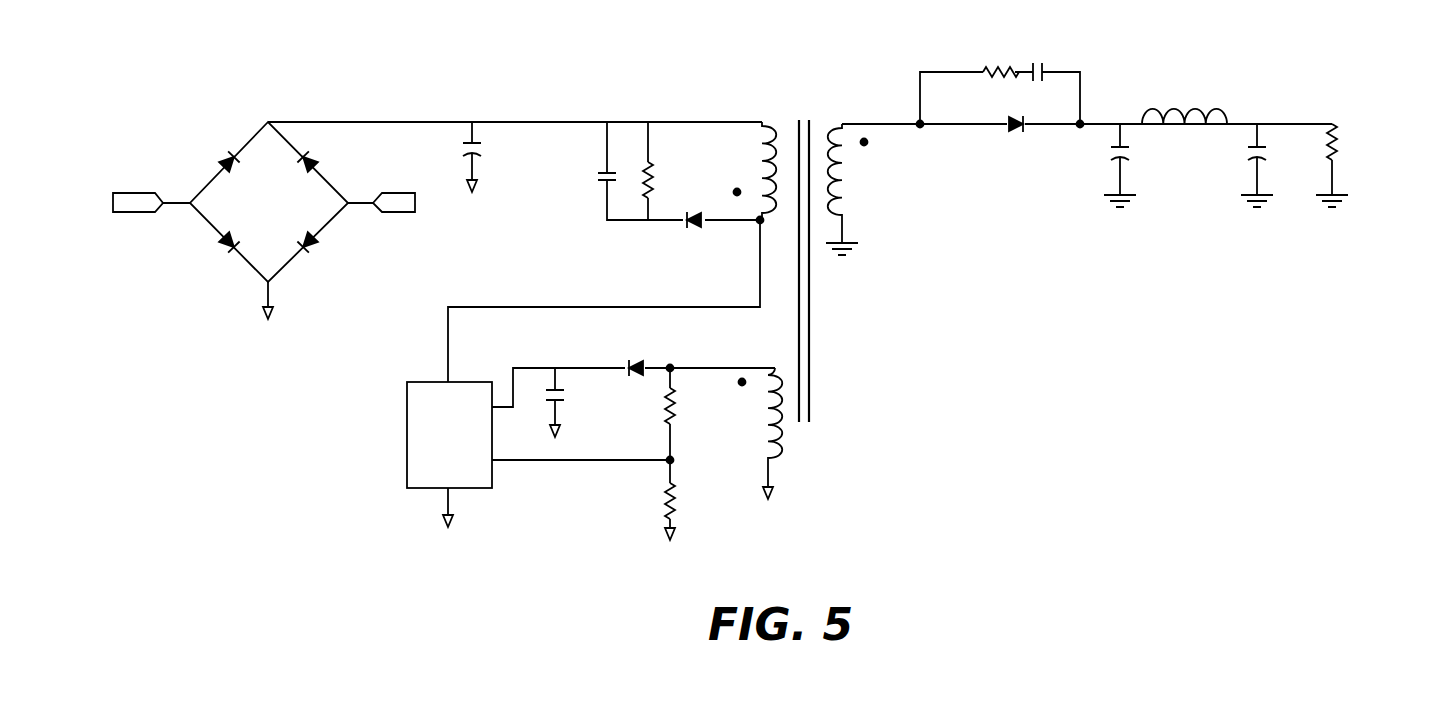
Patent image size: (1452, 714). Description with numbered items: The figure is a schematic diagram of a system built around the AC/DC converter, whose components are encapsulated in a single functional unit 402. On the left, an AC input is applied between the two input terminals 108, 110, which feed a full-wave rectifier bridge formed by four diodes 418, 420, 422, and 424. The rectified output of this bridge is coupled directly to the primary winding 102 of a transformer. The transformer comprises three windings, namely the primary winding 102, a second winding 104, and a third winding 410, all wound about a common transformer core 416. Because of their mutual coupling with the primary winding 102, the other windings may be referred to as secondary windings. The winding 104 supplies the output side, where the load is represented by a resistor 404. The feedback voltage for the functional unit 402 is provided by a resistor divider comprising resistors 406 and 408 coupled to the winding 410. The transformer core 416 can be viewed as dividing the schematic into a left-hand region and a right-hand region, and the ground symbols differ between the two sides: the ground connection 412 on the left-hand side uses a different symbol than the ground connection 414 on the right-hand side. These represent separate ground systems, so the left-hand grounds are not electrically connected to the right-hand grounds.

The primary winding 102 is at (746, 121).
The winding 104 is at (843, 124).
The first AC input terminal 108 is at (142, 192).
The second AC input terminal 110 is at (392, 213).
The functional unit 402 is at (407, 432).
The resistor 404 is at (1342, 148).
The resistor 406 is at (663, 397).
The resistor 408 is at (662, 500).
The winding 410 is at (752, 397).
The ground connection 412 is at (775, 499).
The ground connection 414 is at (858, 258).
The transformer core 416 is at (798, 120).
The diode 418 is at (226, 158).
The diode 420 is at (320, 162).
The diode 422 is at (218, 250).
The diode 424 is at (318, 251).